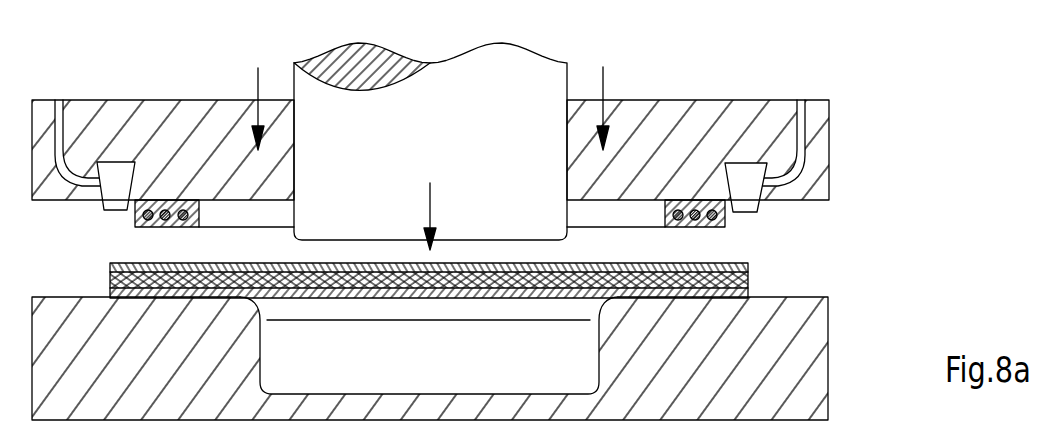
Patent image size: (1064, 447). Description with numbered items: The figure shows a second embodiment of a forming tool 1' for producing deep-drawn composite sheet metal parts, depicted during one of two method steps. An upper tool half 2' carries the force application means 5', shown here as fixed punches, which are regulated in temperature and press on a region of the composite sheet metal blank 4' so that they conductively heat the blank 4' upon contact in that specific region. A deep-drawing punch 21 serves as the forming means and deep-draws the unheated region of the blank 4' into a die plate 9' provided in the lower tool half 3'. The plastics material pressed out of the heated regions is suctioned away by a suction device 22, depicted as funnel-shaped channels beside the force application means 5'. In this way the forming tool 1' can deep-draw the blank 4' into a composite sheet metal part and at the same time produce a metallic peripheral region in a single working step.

The forming tool 1' is at (489, 227).
The upper die plate 2' is at (459, 130).
The lower tool half 3' is at (458, 358).
The composite sheet metal blank 4' is at (429, 316).
The force application means 5' is at (430, 130).
The die plate 9' is at (429, 345).
The deep-drawing punch 21 is at (443, 130).
The suction device 22 is at (115, 172).